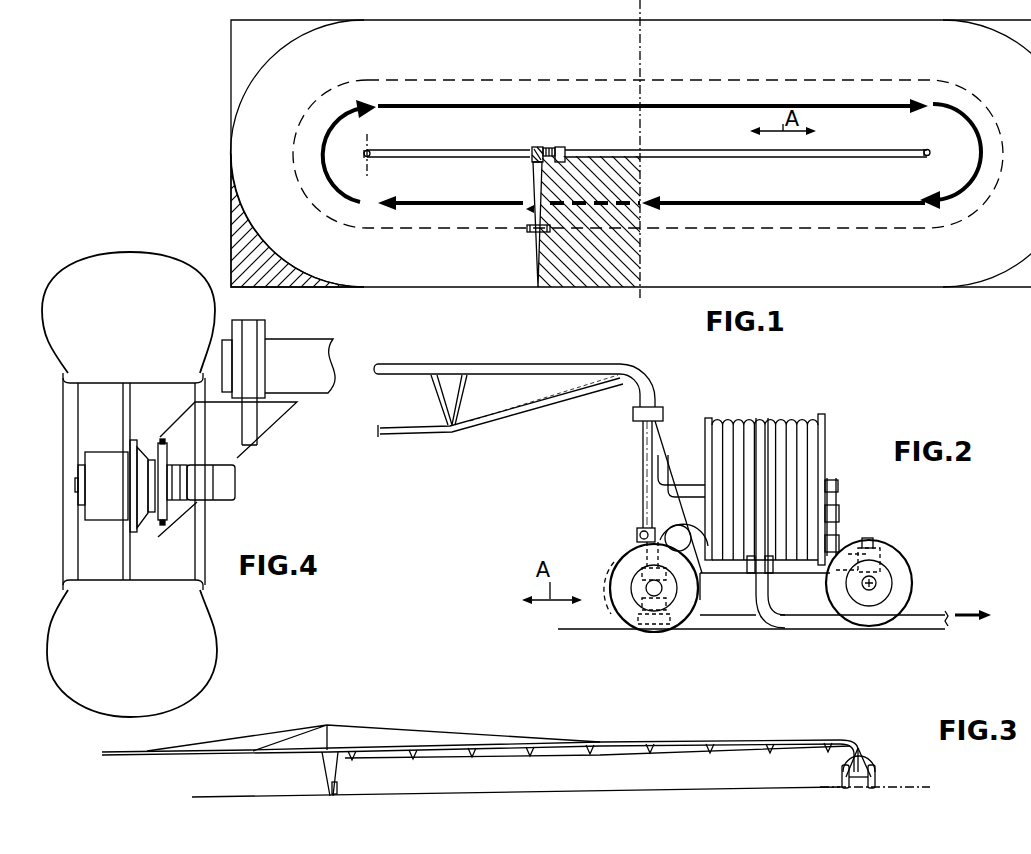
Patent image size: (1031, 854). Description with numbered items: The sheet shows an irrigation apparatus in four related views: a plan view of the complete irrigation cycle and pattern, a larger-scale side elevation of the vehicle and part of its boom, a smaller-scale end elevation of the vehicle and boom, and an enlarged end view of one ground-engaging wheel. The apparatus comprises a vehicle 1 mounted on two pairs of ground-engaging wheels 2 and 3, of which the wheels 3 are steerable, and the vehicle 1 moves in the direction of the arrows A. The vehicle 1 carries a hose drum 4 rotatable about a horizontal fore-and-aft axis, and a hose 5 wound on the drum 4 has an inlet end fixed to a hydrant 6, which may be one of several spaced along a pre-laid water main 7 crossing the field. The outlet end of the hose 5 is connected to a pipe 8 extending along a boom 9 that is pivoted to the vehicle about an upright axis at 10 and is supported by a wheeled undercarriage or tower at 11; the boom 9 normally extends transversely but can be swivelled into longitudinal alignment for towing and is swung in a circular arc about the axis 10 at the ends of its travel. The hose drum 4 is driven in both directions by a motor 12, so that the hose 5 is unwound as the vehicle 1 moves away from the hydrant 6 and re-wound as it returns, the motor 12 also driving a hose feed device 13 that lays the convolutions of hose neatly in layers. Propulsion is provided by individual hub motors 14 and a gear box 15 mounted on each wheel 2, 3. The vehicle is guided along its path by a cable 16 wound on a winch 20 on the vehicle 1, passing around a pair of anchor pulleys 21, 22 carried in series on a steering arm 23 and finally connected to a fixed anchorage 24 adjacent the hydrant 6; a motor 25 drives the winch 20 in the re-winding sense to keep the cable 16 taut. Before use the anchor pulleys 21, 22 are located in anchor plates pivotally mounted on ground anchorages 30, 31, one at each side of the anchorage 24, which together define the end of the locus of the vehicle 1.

In FIG. 1, the vehicle 1 is at (548, 147).
In FIG. 2, the vehicle 1 is at (796, 569).
In FIG. 3, the vehicle 1 is at (858, 780).
In FIG. 4, the vehicle 1 is at (305, 385).
In FIG. 1, the ground-engaging wheels 2 is at (535, 147).
In FIG. 2, the ground-engaging wheels 2 is at (761, 606).
In FIG. 3, the ground-engaging wheels 2 is at (842, 776).
In FIG. 4, the ground-engaging wheels 2 is at (154, 484).
In FIG. 1, the ground-engaging wheels 3 is at (560, 147).
In FIG. 2, the ground-engaging wheels 3 is at (836, 590).
In FIG. 4, the ground-engaging wheels 3 is at (218, 658).
In FIG. 2, the hose drum 4 is at (826, 421).
In FIG. 3, the hose drum 4 is at (870, 761).
In FIG. 1, the hose 5 is at (614, 150).
In FIG. 2, the hose 5 is at (760, 418).
In FIG. 1, the hydrant 6 is at (785, 137).
In FIG. 2, the hydrant 6 is at (873, 523).
In FIG. 1, the water main 7 is at (642, 288).
In FIG. 2, the pipe 8 is at (576, 368).
In FIG. 3, the pipe 8 is at (840, 740).
In FIG. 1, the boom 9 is at (528, 210).
In FIG. 2, the boom 9 is at (437, 420).
In FIG. 3, the boom 9 is at (612, 745).
In FIG. 1, the upright pivot axis 10 is at (533, 162).
In FIG. 2, the upright pivot axis 10 is at (635, 421).
In FIG. 1, the wheeled undercarriage or tower 11 is at (529, 232).
In FIG. 3, the wheeled undercarriage or tower 11 is at (320, 761).
In FIG. 2, the motor 12 is at (839, 515).
In FIG. 2, the hose feed device 13 is at (760, 577).
In FIG. 2, the hub motors 14 is at (662, 590).
In FIG. 4, the hub motors 14 is at (228, 489).
In FIG. 4, the gear box 15 is at (118, 507).
In FIG. 1, the cable 16 is at (430, 150).
In FIG. 2, the winch 20 is at (672, 525).
In FIG. 2, the anchor pulley 21 is at (638, 622).
In FIG. 2, the anchor pulley 22 is at (657, 626).
In FIG. 2, the steering arm 23 is at (616, 594).
In FIG. 1, the fixed anchorage 24 is at (645, 152).
In FIG. 2, the motor 25 is at (638, 530).
In FIG. 1, the anchorage 30 is at (930, 153).
In FIG. 1, the anchorage 31 is at (366, 152).